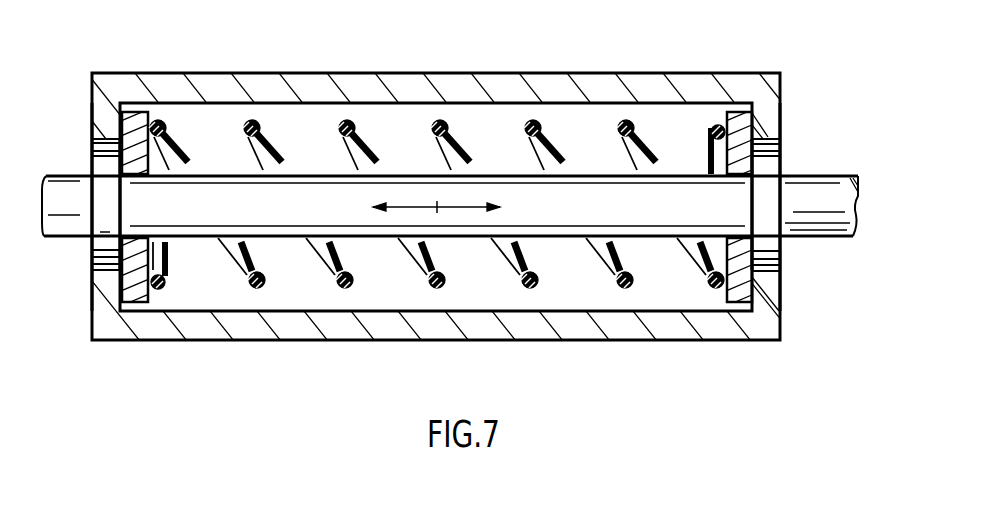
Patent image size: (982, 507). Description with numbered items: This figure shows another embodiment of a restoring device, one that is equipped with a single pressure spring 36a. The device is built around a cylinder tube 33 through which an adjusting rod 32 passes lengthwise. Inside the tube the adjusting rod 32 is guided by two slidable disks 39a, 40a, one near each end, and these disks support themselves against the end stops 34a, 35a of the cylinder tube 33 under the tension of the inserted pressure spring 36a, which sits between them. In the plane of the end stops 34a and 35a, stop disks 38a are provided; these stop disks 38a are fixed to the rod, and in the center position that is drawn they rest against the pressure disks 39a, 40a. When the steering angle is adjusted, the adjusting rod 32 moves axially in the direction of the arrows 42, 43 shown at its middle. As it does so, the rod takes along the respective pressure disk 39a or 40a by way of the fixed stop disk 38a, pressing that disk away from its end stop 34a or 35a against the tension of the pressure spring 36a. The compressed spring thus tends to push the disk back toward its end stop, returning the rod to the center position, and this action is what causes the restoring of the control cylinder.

The adjusting rod 32 is at (320, 187).
The cylinder tube 33 is at (587, 78).
The end stop 34a is at (107, 288).
The end stop 35a is at (763, 302).
The pressure spring 36a is at (715, 125).
The stop disk 38a is at (93, 257).
The slidable disk 39a is at (143, 110).
The slidable disk 40a is at (760, 138).
The arrow 42 is at (408, 207).
The arrow 43 is at (470, 207).